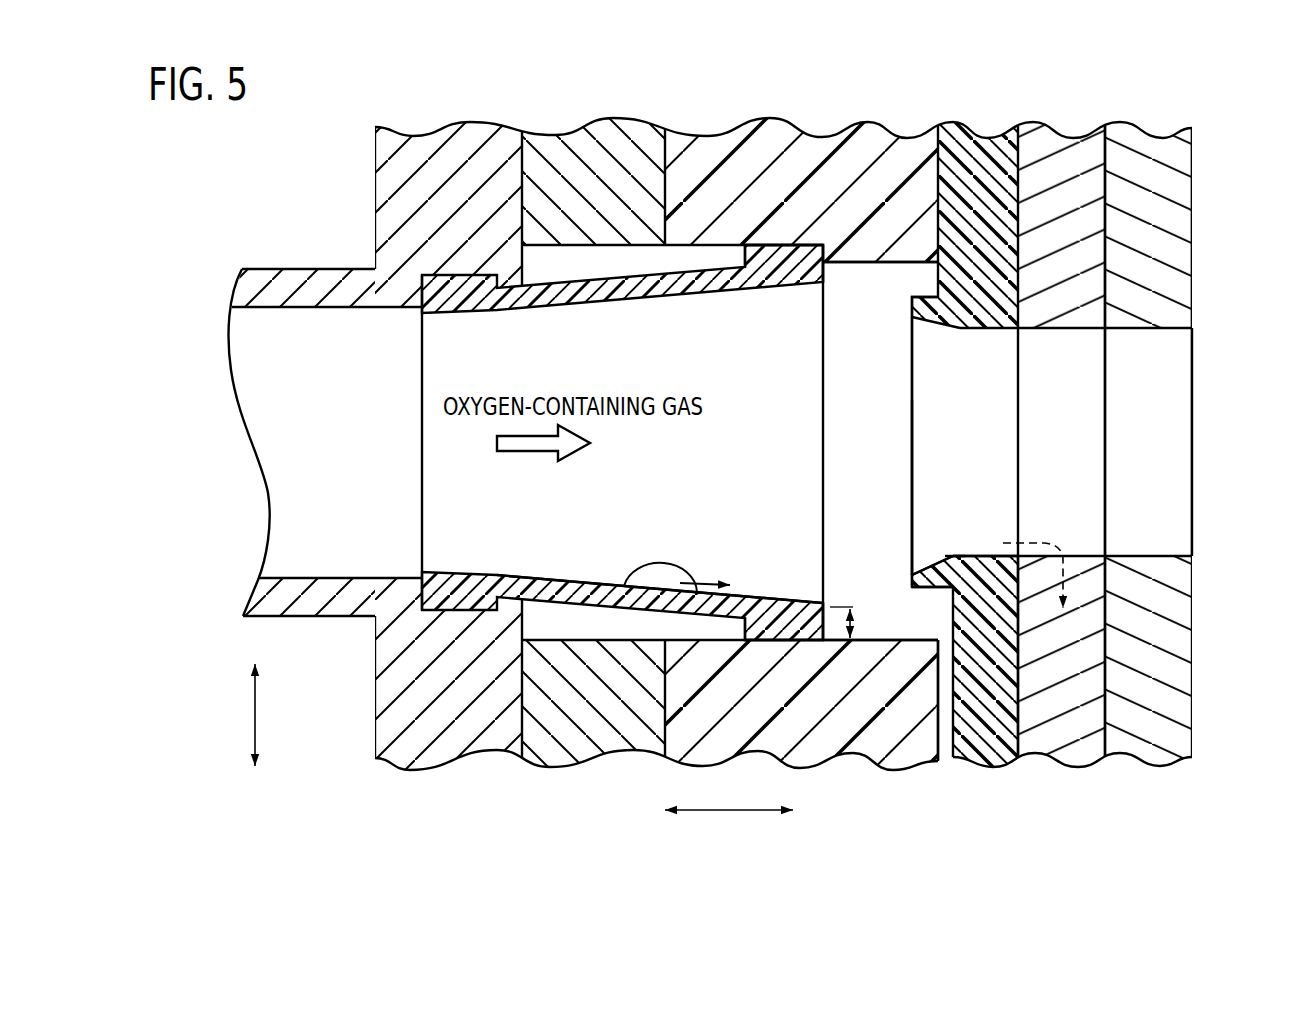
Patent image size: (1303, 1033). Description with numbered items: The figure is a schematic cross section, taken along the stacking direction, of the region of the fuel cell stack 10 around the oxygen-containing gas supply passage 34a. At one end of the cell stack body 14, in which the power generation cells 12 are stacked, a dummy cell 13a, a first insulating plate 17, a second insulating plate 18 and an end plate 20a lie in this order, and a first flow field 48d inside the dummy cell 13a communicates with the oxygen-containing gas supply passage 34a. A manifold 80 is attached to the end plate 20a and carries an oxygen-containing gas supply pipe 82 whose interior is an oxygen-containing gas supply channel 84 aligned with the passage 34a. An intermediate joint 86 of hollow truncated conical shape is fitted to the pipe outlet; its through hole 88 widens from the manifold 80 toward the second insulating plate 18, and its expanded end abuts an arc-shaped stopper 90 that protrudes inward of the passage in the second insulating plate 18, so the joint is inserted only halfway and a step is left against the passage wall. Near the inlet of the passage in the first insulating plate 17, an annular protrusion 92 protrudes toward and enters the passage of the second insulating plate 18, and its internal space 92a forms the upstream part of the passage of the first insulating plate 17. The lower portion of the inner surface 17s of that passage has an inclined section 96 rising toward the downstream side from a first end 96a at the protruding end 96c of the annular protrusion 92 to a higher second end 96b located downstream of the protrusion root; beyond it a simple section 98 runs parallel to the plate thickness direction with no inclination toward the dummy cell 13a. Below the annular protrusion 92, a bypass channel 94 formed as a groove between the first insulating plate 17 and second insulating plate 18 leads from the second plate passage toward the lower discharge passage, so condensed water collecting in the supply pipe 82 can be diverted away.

The fuel cell stack 10 is at (178, 191).
The power generation cell 12 is at (1156, 138).
The dummy cell 13a is at (1062, 134).
The cell stack body 14 is at (1124, 116).
The first insulating plate 17 is at (982, 131).
The inner surface 17s is at (960, 466).
The second insulating plate 18 is at (745, 130).
The end plate 20a is at (596, 132).
The oxygen-containing gas supply passage 34a is at (958, 415).
The first flow field 48d is at (1053, 715).
The manifold 80 is at (437, 126).
The oxygen-containing gas supply pipe 82 is at (295, 268).
The oxygen-containing gas supply channel 84 is at (333, 308).
The intermediate joint 86 is at (609, 292).
The through hole 88 is at (733, 289).
The stopper 90 is at (858, 262).
The annular protrusion 92 is at (917, 304).
The internal space 92a is at (933, 377).
The bypass channel 94 is at (945, 692).
The inclined section 96 is at (936, 552).
The first end 96a is at (913, 572).
The second end 96b is at (955, 555).
The protruding end 96c is at (906, 589).
The simple section 98 is at (991, 555).